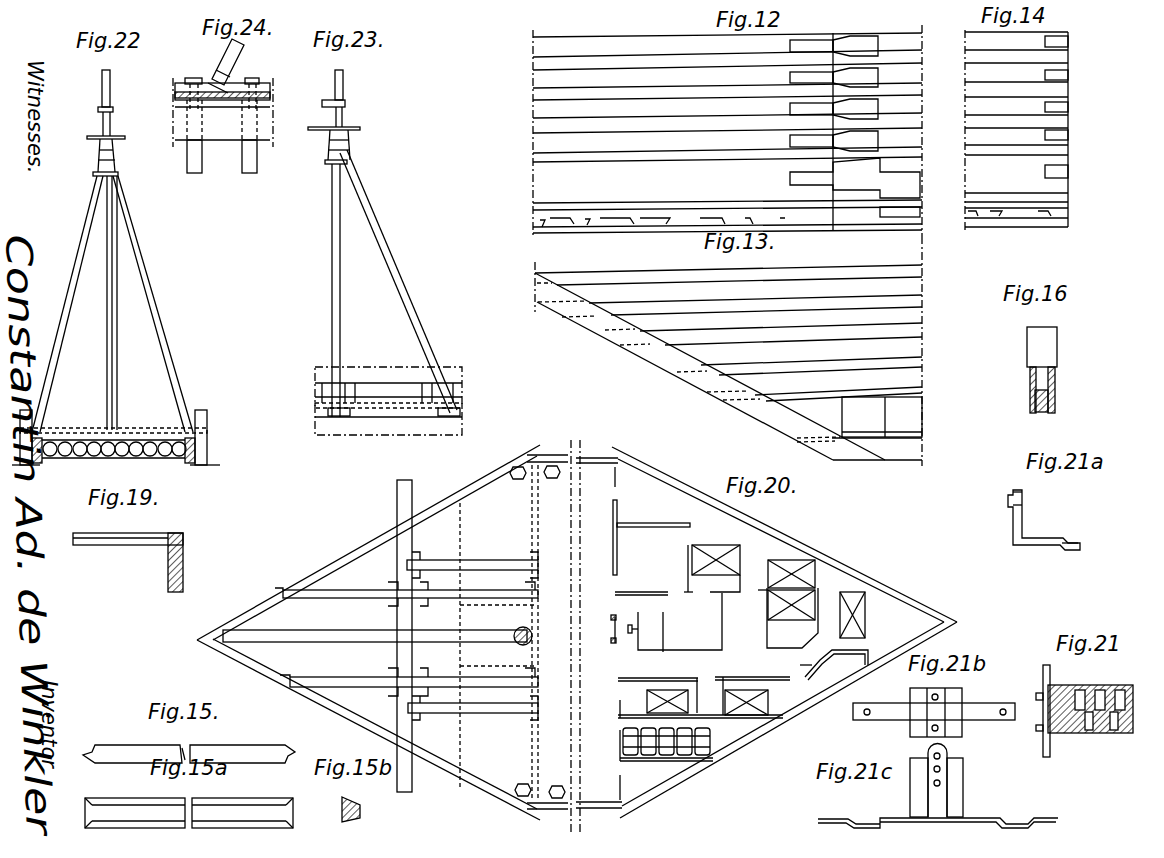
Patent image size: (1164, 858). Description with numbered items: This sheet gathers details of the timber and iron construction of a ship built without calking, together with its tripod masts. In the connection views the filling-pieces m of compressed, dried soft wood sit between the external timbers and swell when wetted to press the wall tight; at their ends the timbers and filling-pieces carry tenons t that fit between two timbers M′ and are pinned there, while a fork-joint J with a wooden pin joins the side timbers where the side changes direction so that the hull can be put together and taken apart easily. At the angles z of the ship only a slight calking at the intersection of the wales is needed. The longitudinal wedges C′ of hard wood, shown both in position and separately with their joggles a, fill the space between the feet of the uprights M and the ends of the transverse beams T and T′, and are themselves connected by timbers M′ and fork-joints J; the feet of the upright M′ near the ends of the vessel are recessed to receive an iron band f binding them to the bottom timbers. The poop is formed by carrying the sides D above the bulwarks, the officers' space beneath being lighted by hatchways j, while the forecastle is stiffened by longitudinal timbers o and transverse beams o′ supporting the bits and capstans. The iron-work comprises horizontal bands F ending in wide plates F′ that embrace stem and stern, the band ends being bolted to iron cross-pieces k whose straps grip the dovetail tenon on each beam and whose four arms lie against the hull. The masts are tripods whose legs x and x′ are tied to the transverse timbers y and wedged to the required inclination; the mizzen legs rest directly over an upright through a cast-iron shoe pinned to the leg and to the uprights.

In FIG. 22, the mast leg / mast proper x is at (105, 303).
In FIG. 23, the mast leg / mast proper x is at (328, 290).
In FIG. 22, the mast leg x′ is at (67, 304).
In FIG. 24, the mast leg x′ is at (233, 66).
In FIG. 23, the mast leg x′ is at (398, 281).
In FIG. 22, the sides D is at (113, 437).
In FIG. 22, the roller bearing r is at (113, 459).
In FIG. 24, the upright M is at (219, 136).
In FIG. 12, the upright M is at (727, 213).
In FIG. 13, the upright M is at (728, 366).
In FIG. 12, the timber / upright M′ is at (861, 213).
In FIG. 14, the timber / upright M′ is at (1026, 208).
In FIG. 13, the timber / upright M′ is at (789, 390).
In FIG. 16, the timber / upright M′ is at (1042, 347).
In FIG. 12, the fork-joint J is at (834, 46).
In FIG. 14, the fork-joint J is at (1056, 105).
In FIG. 12, the bar n is at (834, 77).
In FIG. 14, the bar n is at (1029, 104).
In FIG. 16, the bar n is at (1048, 405).
In FIG. 12, the filling-piece m is at (836, 124).
In FIG. 14, the filling-piece m is at (1030, 106).
In FIG. 12, the tenon t is at (662, 217).
In FIG. 13, the tenon t is at (688, 370).
In FIG. 14, the longitudinal wedge C′ is at (1016, 182).
In FIG. 15, the longitudinal wedge C′ is at (161, 753).
In FIG. 15a, the longitudinal wedge C′ is at (189, 813).
In FIG. 14, the piece c is at (1009, 212).
In FIG. 15b, the wedge c′ is at (359, 812).
In FIG. 16, the iron band f is at (1049, 390).
In FIG. 20, the longitudinal timber o is at (406, 632).
In FIG. 20, the transverse beam o′ is at (377, 636).
In FIG. 20, the angle of the ship z is at (577, 632).
In FIG. 20, the hatchway j is at (739, 633).
In FIG. 15, the joggle a is at (190, 748).
In FIG. 23, the transverse timber y is at (388, 420).
In FIG. 21a, the iron cross-piece k is at (1044, 520).
In FIG. 21b, the iron cross-piece k is at (934, 712).
In FIG. 21c, the iron cross-piece k is at (938, 829).
In FIG. 21, the iron cross-piece k is at (1050, 713).
In FIG. 21a, the horizontal band F is at (1070, 537).
In FIG. 21, the horizontal band F is at (1036, 714).
In FIG. 21a, the iron plate F′ is at (1022, 496).
In FIG. 21, the transverse beam T is at (1090, 700).
In FIG. 21b, the transverse beam T′ is at (936, 711).
In FIG. 21c, the transverse beam T′ is at (936, 781).